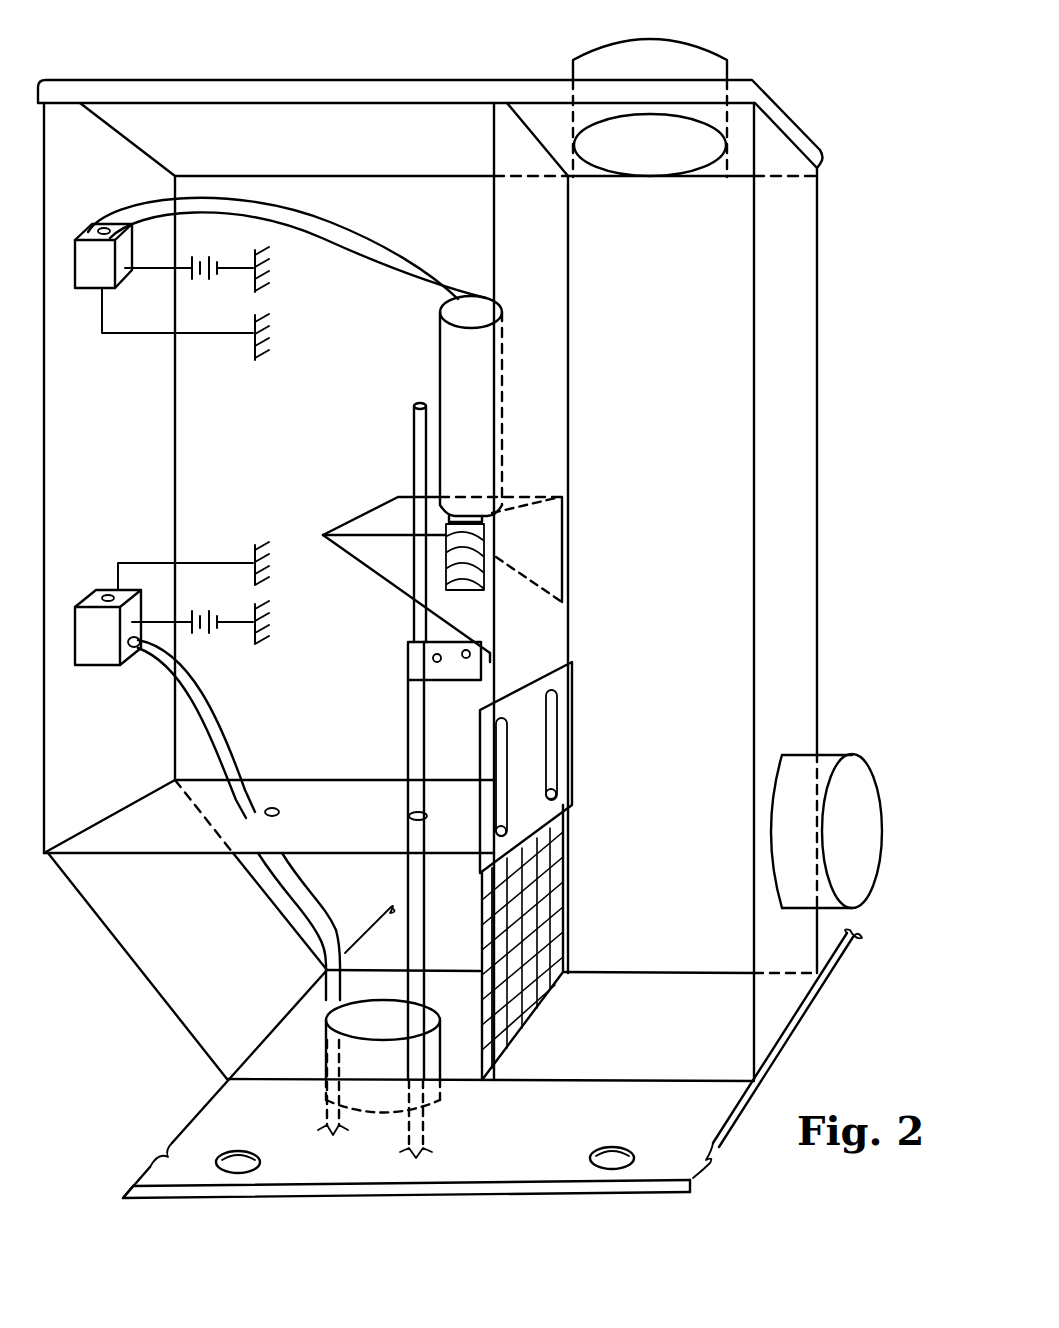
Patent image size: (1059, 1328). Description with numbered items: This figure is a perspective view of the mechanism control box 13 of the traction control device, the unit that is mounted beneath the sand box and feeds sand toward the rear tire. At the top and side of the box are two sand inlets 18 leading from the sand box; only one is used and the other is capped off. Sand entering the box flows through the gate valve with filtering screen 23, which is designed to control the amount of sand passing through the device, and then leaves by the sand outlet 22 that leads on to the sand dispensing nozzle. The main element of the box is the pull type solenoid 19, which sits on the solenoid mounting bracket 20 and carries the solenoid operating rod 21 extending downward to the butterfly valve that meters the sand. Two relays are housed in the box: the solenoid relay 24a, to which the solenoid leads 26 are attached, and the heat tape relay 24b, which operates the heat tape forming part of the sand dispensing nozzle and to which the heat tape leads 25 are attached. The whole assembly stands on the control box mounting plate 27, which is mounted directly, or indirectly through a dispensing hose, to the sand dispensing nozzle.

The mechanism control box 13 is at (818, 302).
The sand inlets 18 is at (727, 67).
The pull type solenoid 19 is at (440, 357).
The solenoid mounting bracket 20 is at (372, 508).
The solenoid operating rod 21 is at (407, 730).
The sand outlet 22 is at (325, 1040).
The gate valve with filtering screen 23 is at (565, 882).
The solenoid relay 24a is at (90, 290).
The heat tape relay 24b is at (90, 592).
The heat tape leads 25 is at (212, 710).
The solenoid leads 26 is at (410, 247).
The control box mounting plate 27 is at (200, 1108).